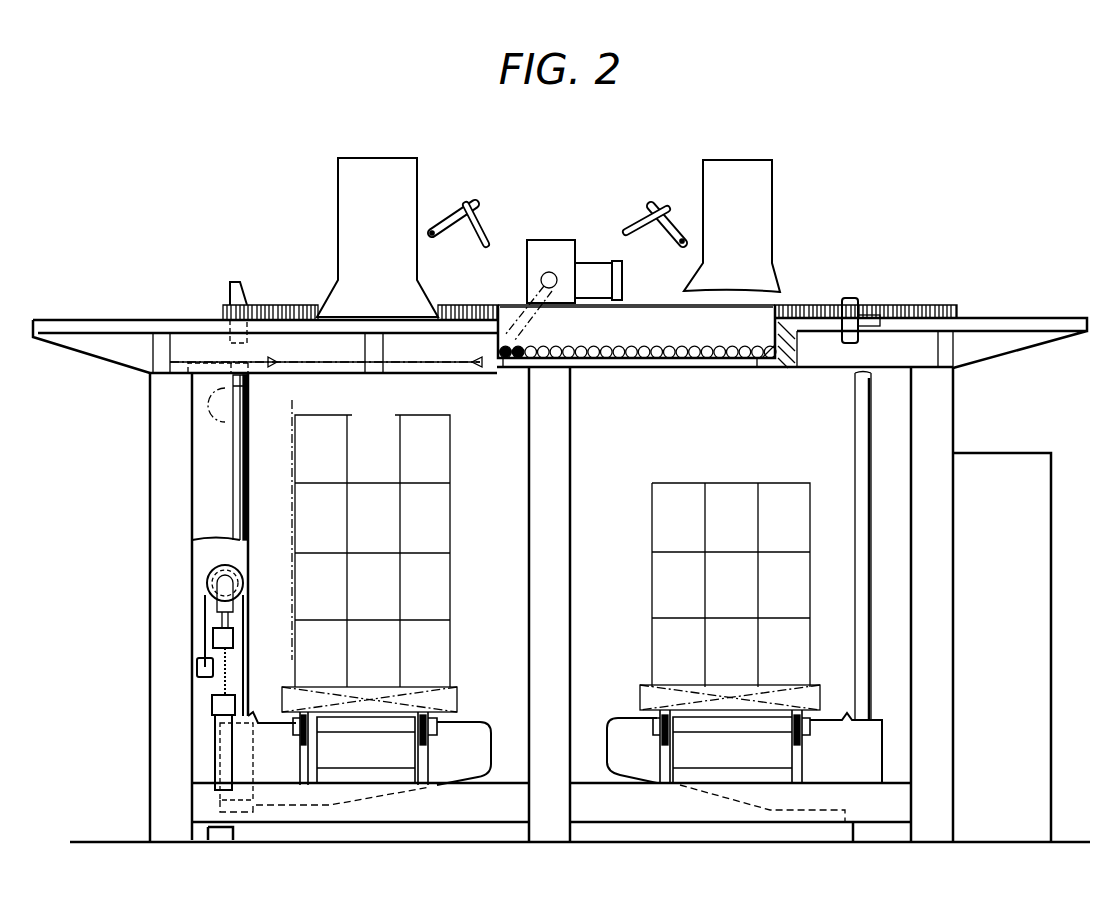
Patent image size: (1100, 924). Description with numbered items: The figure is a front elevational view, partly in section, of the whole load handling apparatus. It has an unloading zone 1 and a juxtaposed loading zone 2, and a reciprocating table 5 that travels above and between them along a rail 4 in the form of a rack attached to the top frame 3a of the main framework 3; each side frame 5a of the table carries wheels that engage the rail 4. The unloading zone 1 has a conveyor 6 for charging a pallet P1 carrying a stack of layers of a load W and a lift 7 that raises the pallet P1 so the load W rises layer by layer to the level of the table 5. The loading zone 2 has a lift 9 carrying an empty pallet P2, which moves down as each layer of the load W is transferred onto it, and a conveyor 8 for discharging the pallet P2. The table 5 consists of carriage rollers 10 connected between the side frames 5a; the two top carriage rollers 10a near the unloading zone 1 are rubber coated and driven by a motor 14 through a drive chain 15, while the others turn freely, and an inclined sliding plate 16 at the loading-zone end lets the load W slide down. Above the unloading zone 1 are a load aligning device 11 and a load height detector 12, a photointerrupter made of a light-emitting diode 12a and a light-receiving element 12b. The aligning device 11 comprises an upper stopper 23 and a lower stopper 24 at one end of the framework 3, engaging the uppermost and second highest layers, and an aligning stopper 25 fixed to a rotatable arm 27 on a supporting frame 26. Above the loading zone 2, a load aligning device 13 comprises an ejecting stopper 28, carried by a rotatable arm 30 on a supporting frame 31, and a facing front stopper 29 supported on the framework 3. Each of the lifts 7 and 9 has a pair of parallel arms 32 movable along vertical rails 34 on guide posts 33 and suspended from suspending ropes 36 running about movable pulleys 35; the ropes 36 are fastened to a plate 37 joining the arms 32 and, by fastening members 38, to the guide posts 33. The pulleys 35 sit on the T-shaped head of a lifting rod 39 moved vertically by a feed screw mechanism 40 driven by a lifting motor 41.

The unloading zone 1 is at (360, 880).
The loading zone 2 is at (724, 880).
The main framework 3 is at (146, 421).
The top frame 3a is at (184, 320).
The rail 4 is at (465, 320).
The reciprocating table 5 is at (702, 322).
The side frame 5a is at (648, 316).
The conveyor 6 is at (440, 748).
The lift 7 is at (466, 712).
The conveyor 8 is at (655, 748).
The lift 9 is at (628, 708).
The carriage rollers 10 is at (612, 367).
The top carriage rollers 10a is at (510, 367).
The load aligning device 11 is at (234, 276).
The load height detector 12 is at (433, 400).
The light-emitting diode 12a is at (280, 365).
The light-receiving element 12b is at (476, 368).
The load aligning device 13 is at (655, 190).
The motor 14 is at (585, 262).
The drive chain 15 is at (527, 334).
The inclined sliding plate 16 is at (757, 367).
The upper stopper 23 is at (247, 292).
The lower stopper 24 is at (188, 372).
The aligning stopper 25 is at (482, 220).
The supporting frame 26 is at (369, 178).
The rotatable arm 27 is at (434, 226).
The ejecting stopper 28 is at (630, 226).
The front stopper 29 is at (850, 298).
The rotatable arm 30 is at (672, 215).
The supporting frame 31 is at (738, 172).
The parallel arms 32 is at (481, 738).
The guide posts 33 is at (249, 520).
The vertical rails 34 is at (233, 492).
The movable pulleys 35 is at (218, 417).
The suspending ropes 36 is at (213, 638).
The plate 37 is at (220, 771).
The fastening members 38 is at (197, 668).
The lifting rod 39 is at (221, 618).
The feed screw mechanism 40 is at (212, 702).
The lifting motor 41 is at (222, 718).
The load W is at (432, 471).
The pallet P1 is at (452, 686).
The pallet P2 is at (645, 684).